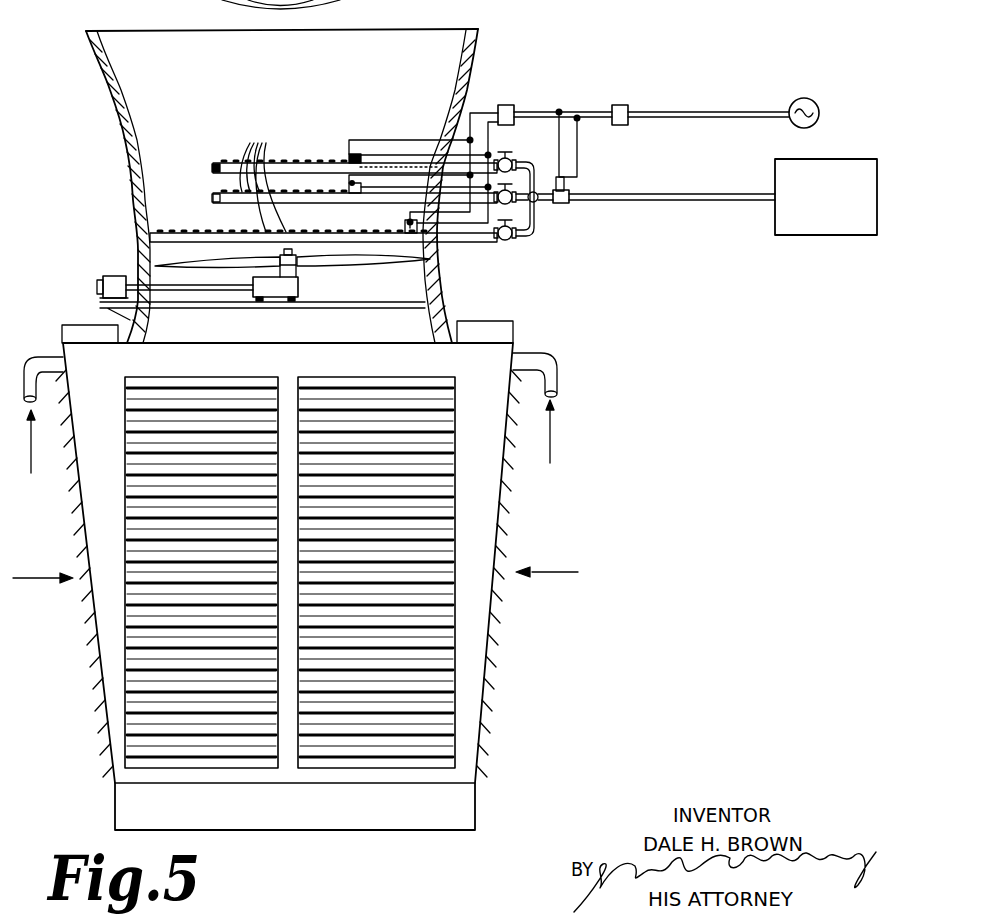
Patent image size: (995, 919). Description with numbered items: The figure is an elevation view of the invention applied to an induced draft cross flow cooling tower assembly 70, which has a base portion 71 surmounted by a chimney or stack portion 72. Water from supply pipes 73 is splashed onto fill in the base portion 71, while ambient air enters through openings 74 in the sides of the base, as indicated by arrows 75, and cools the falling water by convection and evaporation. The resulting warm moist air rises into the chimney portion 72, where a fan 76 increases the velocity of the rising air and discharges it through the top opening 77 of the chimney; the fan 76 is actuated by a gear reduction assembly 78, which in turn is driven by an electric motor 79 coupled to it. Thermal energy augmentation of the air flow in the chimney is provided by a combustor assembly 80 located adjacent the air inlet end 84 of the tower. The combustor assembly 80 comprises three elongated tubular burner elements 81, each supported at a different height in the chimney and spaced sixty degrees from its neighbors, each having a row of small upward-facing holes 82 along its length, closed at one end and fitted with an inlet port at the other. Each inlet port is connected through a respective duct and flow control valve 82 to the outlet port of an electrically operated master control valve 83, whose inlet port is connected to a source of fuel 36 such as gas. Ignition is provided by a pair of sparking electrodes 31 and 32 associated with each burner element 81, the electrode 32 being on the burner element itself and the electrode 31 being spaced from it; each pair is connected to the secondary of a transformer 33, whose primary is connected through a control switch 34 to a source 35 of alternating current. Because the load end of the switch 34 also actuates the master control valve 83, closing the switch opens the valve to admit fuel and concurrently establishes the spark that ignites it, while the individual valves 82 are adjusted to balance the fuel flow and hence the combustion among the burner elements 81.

The sparking electrode 31 is at (351, 155).
The sparking electrode 32 is at (350, 160).
The transformer 33 is at (506, 104).
The control switch 34 is at (620, 104).
The source of alternating current 35 is at (818, 86).
The source of fuel 36 is at (848, 236).
The cooling tower assembly 70 is at (558, 318).
The base portion 71 is at (496, 498).
The chimney or stack portion 72 is at (122, 138).
The supply pipes 73 is at (38, 346).
The openings 74 is at (493, 657).
The arrows 75 is at (45, 560).
The fan 76 is at (213, 262).
The top opening 77 is at (490, 14).
The gear reduction assembly 78 is at (296, 290).
The electric motor 79 is at (108, 276).
The combustor assembly 80 is at (199, 159).
The burner elements 81 is at (212, 233).
The flow control valves 82 is at (520, 250).
The master control valve 83 is at (565, 203).
The air inlet end 84 is at (144, 342).